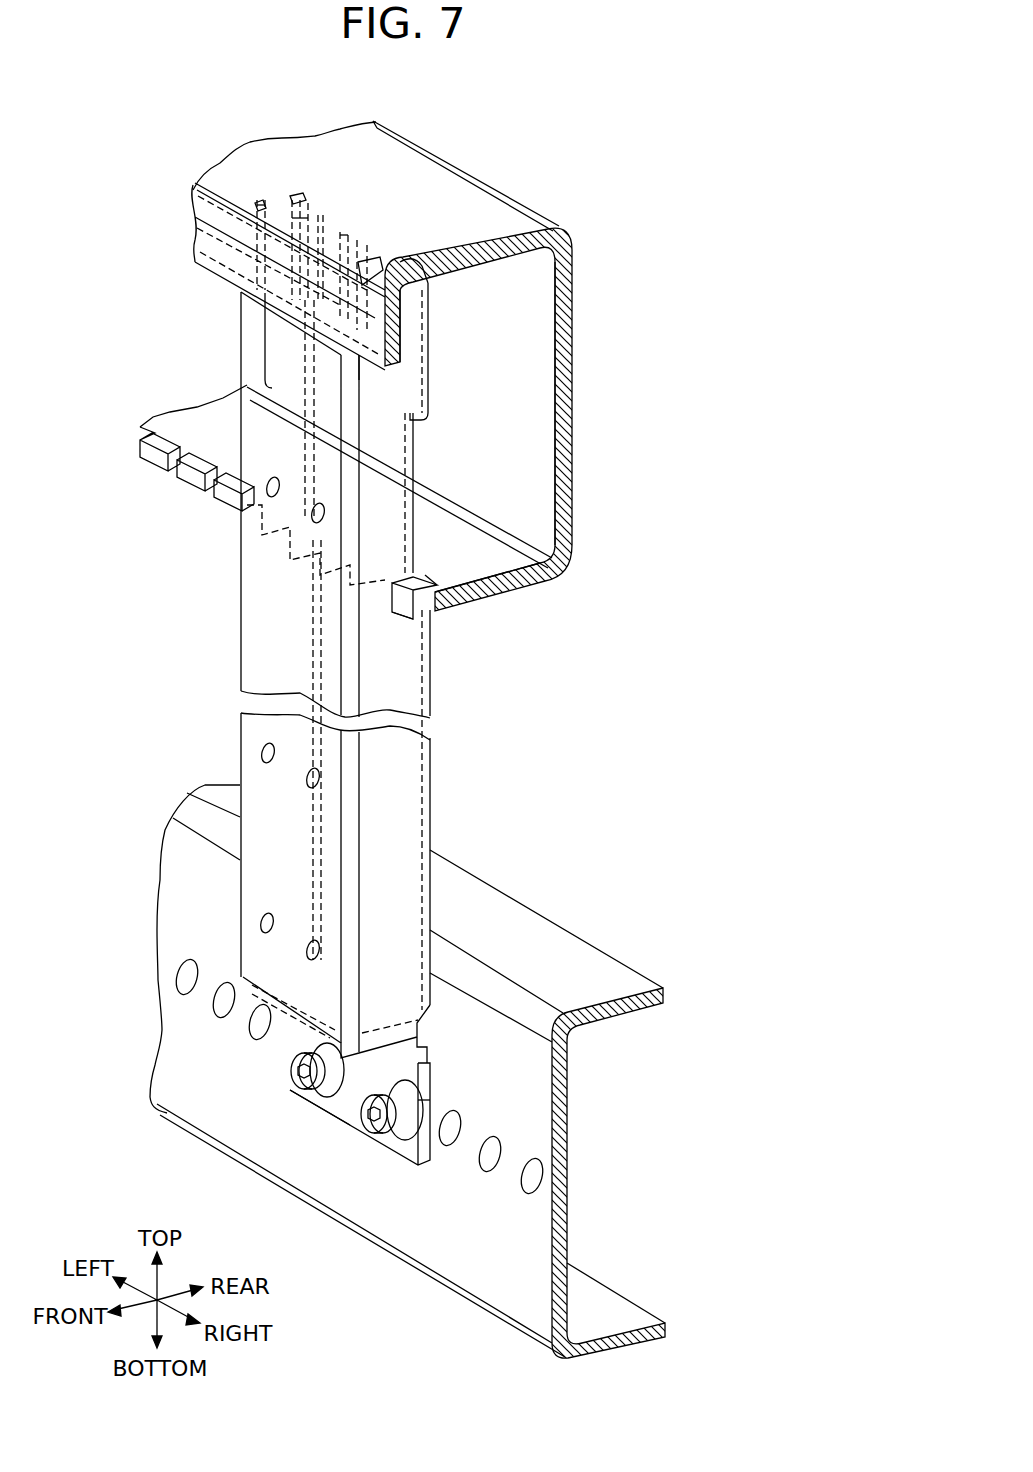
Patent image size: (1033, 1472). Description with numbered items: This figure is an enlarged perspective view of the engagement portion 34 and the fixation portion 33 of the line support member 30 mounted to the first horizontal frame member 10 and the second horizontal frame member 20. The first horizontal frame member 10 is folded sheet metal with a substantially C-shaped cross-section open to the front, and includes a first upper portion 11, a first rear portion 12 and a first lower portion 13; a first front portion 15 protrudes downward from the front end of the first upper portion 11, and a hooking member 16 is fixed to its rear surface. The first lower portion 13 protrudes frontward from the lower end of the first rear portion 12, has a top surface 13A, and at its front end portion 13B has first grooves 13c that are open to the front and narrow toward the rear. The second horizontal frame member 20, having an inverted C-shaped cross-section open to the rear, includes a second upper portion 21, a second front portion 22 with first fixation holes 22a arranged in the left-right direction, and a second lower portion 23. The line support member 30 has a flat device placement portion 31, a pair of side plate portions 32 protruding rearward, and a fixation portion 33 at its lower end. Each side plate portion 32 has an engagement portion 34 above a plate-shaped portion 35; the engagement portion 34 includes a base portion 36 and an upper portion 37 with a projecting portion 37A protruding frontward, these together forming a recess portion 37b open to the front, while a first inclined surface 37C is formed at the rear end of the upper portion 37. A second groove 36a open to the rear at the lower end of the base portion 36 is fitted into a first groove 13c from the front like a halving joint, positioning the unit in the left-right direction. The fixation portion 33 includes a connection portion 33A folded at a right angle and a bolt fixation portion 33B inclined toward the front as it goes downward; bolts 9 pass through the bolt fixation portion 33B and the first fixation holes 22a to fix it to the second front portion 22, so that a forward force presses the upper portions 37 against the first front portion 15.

The bolt 9 is at (314, 1127).
The first horizontal frame member 10 is at (404, 388).
The first upper portion 11 is at (466, 177).
The first rear portion 12 is at (598, 403).
The first lower portion 13 is at (492, 609).
The top surface 13A is at (452, 484).
The front end portion 13B is at (296, 637).
The first groove 13c is at (276, 573).
The first front portion 15 is at (255, 276).
The hooking member 16 is at (517, 326).
The second horizontal frame member 20 is at (448, 1076).
The second upper portion 21 is at (580, 946).
The second front portion 22 is at (411, 1162).
The first fixation hole 22a is at (360, 1162).
The second lower portion 23 is at (648, 1293).
The line support member 30 is at (392, 572).
The device placement portion 31 is at (261, 450).
The side plate portion 32 is at (366, 810).
The fixation portion 33 is at (356, 1187).
The connection portion 33A is at (390, 1198).
The bolt fixation portion 33B is at (324, 1186).
The engagement portion 34 is at (392, 381).
The plate-shaped portion 35 is at (345, 532).
The base portion 36 is at (392, 527).
The second groove 36a is at (406, 543).
The upper portion 37 is at (400, 253).
The projecting portion 37A is at (352, 173).
The recess portion 37b is at (251, 179).
The first inclined surface 37C is at (459, 214).